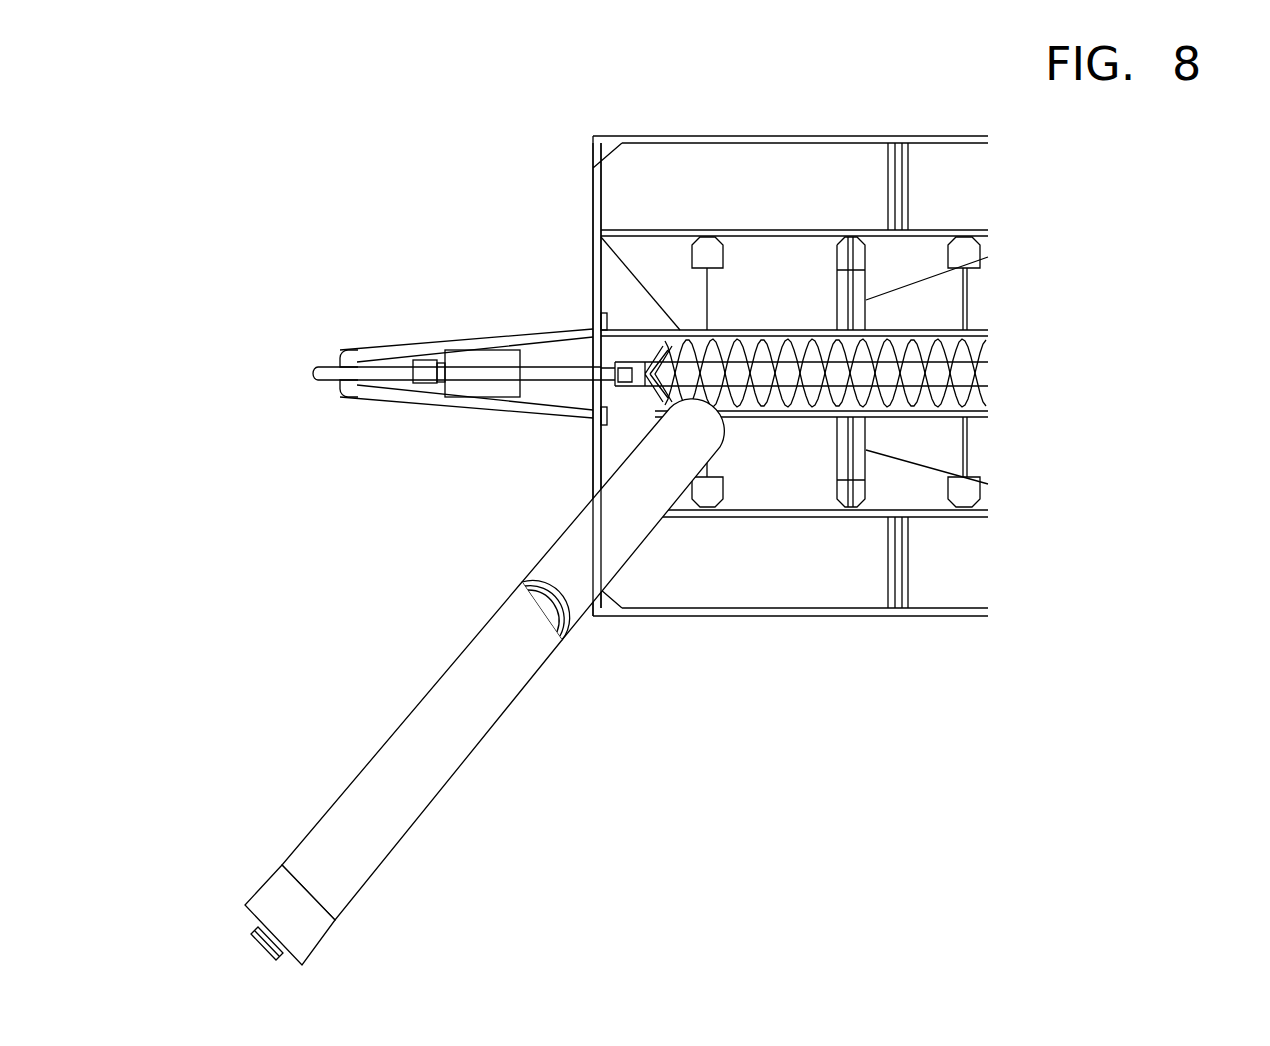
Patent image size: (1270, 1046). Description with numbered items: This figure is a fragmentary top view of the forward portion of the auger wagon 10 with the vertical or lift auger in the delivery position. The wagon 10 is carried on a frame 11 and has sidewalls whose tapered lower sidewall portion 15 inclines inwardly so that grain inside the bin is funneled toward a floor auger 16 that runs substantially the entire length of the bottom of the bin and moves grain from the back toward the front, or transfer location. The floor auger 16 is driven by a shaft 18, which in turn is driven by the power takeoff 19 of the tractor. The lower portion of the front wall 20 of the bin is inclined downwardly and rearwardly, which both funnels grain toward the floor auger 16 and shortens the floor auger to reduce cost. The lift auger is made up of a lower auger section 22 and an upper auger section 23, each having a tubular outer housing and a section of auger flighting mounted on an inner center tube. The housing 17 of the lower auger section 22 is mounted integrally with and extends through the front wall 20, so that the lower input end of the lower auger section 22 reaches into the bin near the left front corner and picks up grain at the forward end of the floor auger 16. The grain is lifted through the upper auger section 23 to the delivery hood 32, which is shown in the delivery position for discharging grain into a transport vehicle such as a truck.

The auger wagon 10 is at (729, 376).
The frame 11 is at (445, 403).
The tapered lower sidewall portion 15 is at (794, 553).
The floor auger 16 is at (840, 483).
The housing 17 is at (801, 552).
The shaft 18 is at (473, 337).
The power takeoff 19 is at (406, 410).
The front wall 20 is at (589, 283).
The lower auger section 22 is at (588, 519).
The upper auger section 23 is at (424, 751).
The delivery hood 32 is at (242, 896).